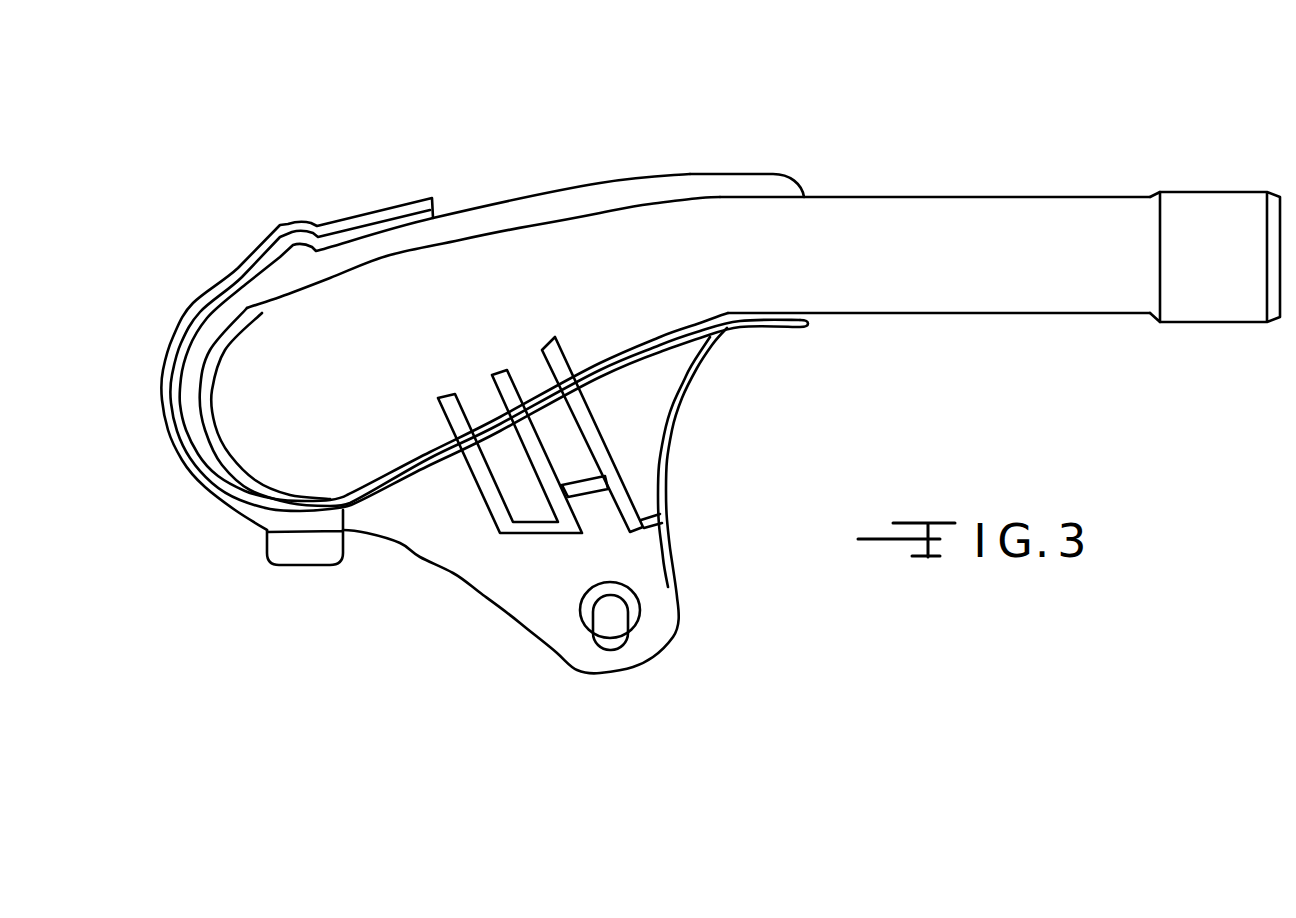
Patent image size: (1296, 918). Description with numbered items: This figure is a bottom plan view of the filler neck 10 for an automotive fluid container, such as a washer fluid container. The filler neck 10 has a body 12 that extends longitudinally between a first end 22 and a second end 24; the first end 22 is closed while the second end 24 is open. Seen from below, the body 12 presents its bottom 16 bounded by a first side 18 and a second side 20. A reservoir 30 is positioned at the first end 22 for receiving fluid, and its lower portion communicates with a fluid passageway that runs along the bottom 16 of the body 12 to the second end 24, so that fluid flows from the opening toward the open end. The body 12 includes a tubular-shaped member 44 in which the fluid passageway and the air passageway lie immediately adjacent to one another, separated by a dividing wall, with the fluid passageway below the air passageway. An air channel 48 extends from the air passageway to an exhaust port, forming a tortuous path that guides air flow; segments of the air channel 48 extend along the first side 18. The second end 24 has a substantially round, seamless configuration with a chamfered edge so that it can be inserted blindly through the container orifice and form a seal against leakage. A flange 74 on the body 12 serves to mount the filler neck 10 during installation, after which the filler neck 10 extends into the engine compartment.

The filler neck 10 is at (788, 92).
The body 12 is at (723, 172).
The bottom 16 is at (646, 224).
The first side 18 is at (837, 195).
The second side 20 is at (882, 315).
The first end 22 is at (172, 446).
The second end 24 is at (1258, 192).
The reservoir 30 is at (473, 273).
The tubular-shaped member 44 is at (985, 195).
The air channel 48 is at (559, 193).
The flange 74 is at (520, 583).